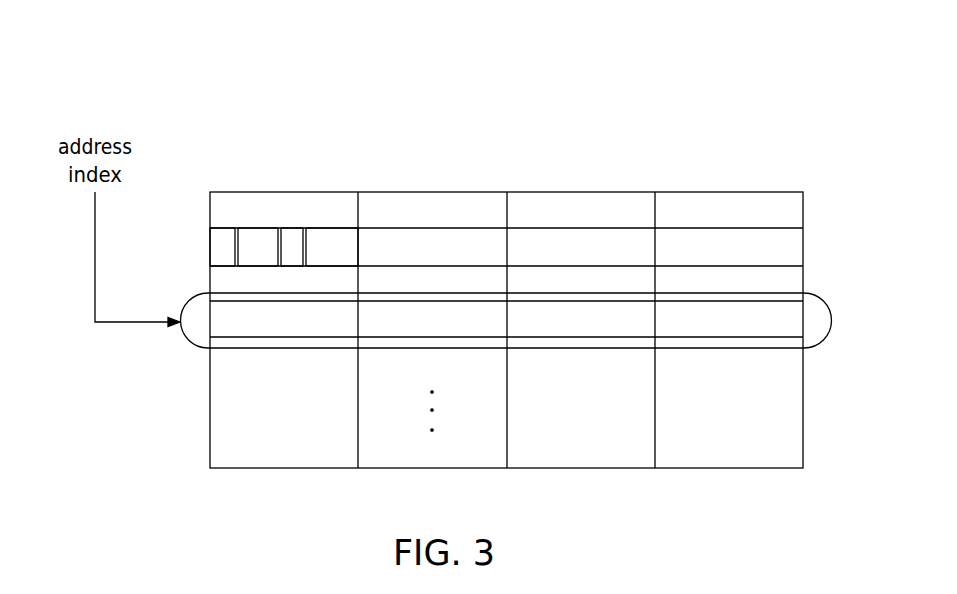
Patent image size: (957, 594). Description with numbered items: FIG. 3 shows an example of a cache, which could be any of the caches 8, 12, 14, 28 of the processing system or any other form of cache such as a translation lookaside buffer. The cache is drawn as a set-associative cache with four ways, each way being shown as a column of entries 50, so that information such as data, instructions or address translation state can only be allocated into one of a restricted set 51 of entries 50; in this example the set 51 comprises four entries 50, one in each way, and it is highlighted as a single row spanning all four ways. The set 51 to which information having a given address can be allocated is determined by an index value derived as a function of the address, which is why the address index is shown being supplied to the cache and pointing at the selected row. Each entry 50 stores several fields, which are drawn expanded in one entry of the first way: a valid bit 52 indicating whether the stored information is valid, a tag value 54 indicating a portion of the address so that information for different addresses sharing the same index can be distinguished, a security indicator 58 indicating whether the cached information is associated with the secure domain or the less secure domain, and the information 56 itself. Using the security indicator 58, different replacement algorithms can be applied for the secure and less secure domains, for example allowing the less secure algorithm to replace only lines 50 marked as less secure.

The cache 8 is at (506, 241).
The cache 12 is at (506, 241).
The cache 14 is at (506, 241).
The cache 28 is at (531, 76).
The cache entry 50 is at (293, 320).
The set 51 is at (828, 342).
The valid bit 52 is at (213, 252).
The tag value 54 is at (260, 228).
The information 56 is at (330, 228).
The security indicator 58 is at (292, 266).